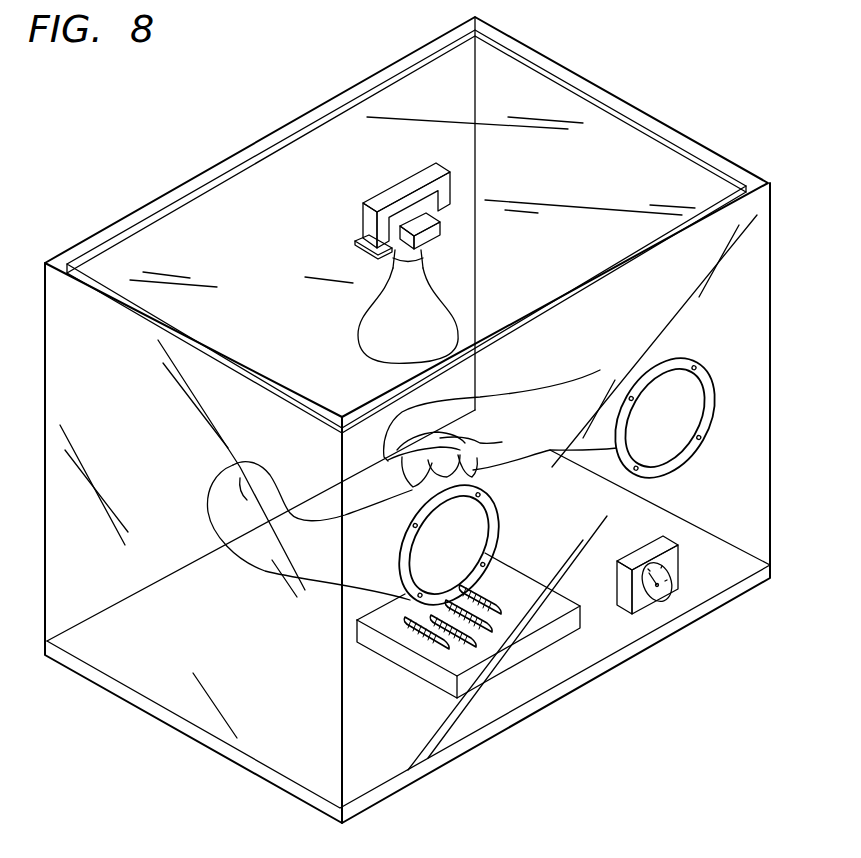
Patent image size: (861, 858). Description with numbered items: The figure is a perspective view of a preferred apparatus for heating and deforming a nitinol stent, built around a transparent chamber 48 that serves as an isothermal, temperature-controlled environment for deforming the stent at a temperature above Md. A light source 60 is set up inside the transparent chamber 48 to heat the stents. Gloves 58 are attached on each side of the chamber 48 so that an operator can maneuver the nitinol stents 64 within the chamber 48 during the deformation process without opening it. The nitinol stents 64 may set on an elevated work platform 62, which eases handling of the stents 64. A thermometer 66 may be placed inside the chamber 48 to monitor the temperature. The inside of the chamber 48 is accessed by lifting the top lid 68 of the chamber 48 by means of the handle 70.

The transparent chamber 48 is at (663, 95).
The gloves 58 is at (588, 390).
The light source 60 is at (440, 322).
The elevated work platform 62 is at (558, 633).
The nitinol stents 64 is at (437, 648).
The thermometer 66 is at (678, 554).
The top lid 68 is at (165, 242).
The handle 70 is at (388, 182).